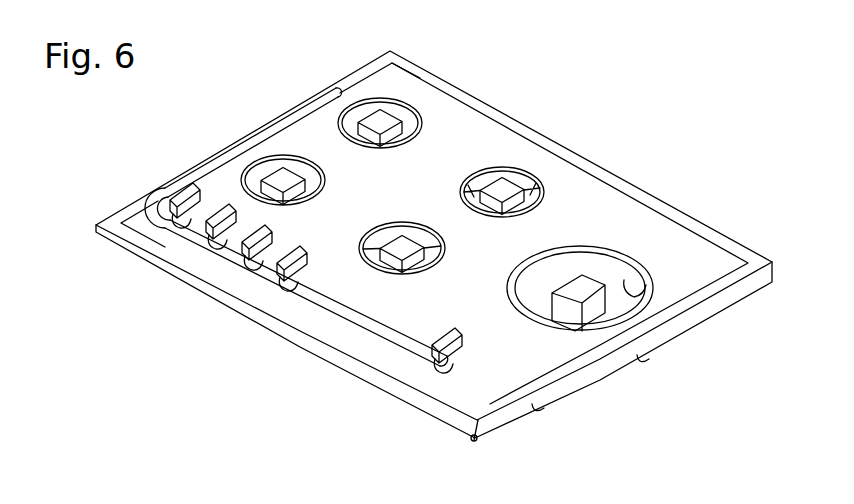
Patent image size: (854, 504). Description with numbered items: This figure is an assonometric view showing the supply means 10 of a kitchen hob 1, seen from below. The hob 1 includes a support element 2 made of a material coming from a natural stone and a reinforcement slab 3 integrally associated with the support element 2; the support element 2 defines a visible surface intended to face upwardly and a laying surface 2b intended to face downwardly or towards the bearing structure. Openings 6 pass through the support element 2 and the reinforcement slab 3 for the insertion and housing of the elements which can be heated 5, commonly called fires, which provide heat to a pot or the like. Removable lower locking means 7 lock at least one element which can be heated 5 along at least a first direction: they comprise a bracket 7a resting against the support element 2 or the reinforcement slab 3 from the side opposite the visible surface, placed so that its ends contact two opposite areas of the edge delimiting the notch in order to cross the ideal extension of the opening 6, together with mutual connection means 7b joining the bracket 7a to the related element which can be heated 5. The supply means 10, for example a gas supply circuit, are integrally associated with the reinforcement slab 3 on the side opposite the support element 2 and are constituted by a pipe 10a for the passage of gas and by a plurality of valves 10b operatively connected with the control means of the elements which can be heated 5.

The hob 1 is at (714, 89).
The support element 2 is at (110, 219).
The laying surface 2b is at (728, 283).
The reinforcement slab 3 is at (668, 243).
The element which can be heated 5 is at (576, 306).
The opening 6 is at (633, 297).
The lower locking means 7 is at (572, 185).
The bracket 7a is at (498, 172).
The mutual connection means 7b is at (470, 190).
The supply means 10 is at (316, 312).
The pipe 10a is at (398, 333).
The valves 10b is at (250, 243).